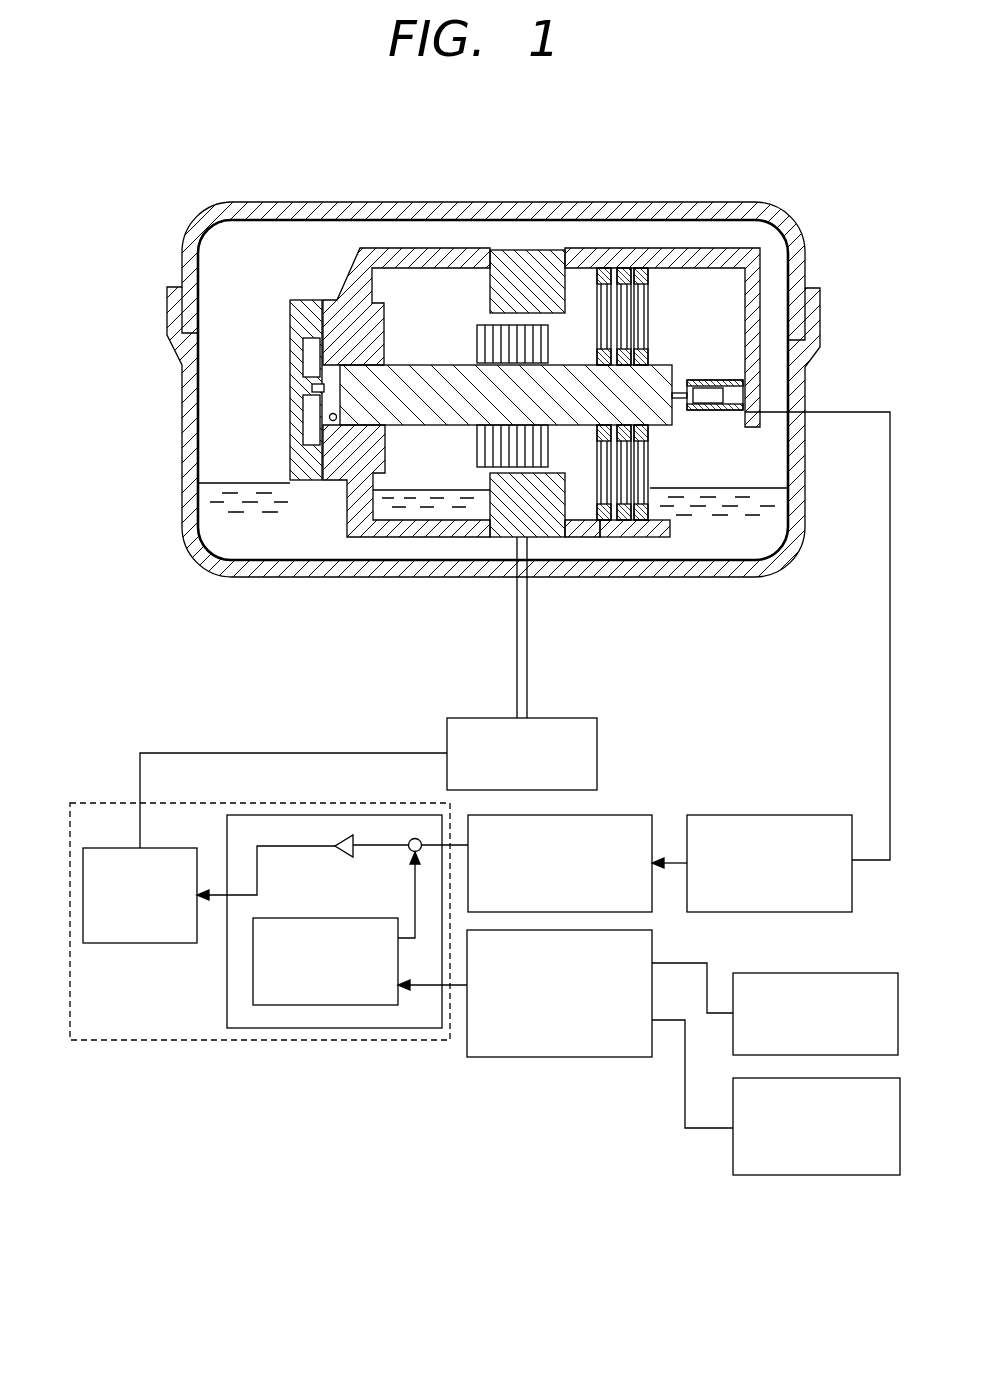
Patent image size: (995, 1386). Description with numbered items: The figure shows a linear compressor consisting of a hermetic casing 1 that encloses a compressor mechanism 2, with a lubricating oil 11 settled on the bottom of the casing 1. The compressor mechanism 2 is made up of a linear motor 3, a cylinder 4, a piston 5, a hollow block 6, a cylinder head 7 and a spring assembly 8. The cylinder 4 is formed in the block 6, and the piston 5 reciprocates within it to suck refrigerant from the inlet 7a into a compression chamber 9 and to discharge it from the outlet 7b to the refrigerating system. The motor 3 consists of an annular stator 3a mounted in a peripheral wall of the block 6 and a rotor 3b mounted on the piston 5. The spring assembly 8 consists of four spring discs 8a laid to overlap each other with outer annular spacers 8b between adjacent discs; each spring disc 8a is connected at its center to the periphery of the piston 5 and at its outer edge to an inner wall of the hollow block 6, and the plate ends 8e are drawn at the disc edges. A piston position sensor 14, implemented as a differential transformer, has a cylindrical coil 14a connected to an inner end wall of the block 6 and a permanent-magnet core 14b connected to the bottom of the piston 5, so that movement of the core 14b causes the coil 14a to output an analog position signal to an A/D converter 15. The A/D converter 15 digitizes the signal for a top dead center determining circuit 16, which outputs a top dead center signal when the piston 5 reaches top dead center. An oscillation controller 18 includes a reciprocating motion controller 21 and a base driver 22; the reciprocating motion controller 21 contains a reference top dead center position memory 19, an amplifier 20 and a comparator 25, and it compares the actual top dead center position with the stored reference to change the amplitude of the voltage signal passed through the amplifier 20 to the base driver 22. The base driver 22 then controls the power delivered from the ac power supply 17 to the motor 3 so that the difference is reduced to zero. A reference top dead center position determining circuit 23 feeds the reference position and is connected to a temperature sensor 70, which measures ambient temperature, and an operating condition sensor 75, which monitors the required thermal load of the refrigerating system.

The hermetic casing 1 is at (769, 568).
The compressor mechanism 2 is at (521, 342).
The linear motor 3 is at (511, 433).
The annular stator 3a is at (533, 248).
The rotor 3b is at (490, 470).
The cylinder 4 is at (333, 425).
The piston 5 is at (407, 412).
The hollow block 6 is at (685, 252).
The cylinder head 7 is at (233, 445).
The inlet 7a is at (307, 358).
The outlet 7b is at (302, 423).
The spring assembly 8 is at (663, 407).
The spring discs 8a is at (645, 525).
The outer annular spacers 8b is at (604, 268).
The plate electrodes 8e is at (650, 432).
The compression chamber 9 is at (316, 390).
The lubricating oil 11 is at (280, 547).
The piston position sensor 14 is at (781, 553).
The cylindrical coil 14a is at (743, 382).
The core 14b is at (722, 394).
The A/D converter 15 is at (792, 815).
The top dead center determining circuit 16 is at (632, 815).
The ac power supply 17 is at (597, 733).
The oscillation controller 18 is at (427, 1040).
The reference top dead center position memory 19 is at (350, 1005).
The amplifier 20 is at (340, 853).
The reciprocating motion controller 21 is at (273, 1028).
The base driver 22 is at (140, 947).
The reference top dead center position determining circuit 23 is at (562, 1057).
The comparator 25 is at (408, 833).
The temperature sensor 70 is at (853, 973).
The operating condition sensor 75 is at (832, 1175).